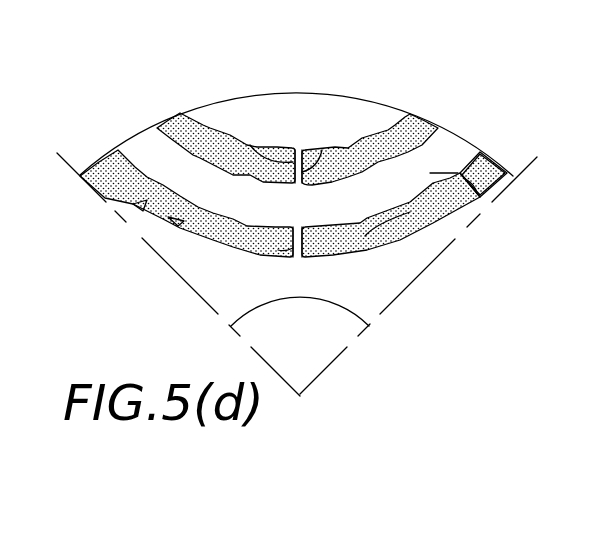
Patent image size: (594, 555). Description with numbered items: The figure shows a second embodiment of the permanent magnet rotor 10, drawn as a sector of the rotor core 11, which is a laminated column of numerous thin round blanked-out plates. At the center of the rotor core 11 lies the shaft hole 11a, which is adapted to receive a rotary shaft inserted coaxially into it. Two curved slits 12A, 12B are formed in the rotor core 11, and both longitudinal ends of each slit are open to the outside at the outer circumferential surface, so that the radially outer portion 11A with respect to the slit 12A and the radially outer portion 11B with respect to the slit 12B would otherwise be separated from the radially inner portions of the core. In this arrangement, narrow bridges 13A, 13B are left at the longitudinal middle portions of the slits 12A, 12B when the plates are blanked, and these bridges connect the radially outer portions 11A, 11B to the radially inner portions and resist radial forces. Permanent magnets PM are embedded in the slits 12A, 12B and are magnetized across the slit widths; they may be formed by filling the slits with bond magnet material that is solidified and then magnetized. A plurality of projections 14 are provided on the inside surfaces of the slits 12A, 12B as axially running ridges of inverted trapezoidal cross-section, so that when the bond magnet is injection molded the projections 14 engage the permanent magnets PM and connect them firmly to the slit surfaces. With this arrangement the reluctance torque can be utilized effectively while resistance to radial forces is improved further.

The permanent magnet rotor 10 is at (463, 63).
The rotor core 11 is at (416, 264).
The radially outer portion of the rotor core 11A is at (332, 104).
The radially outer portion of the rotor core 11B is at (478, 198).
The shaft hole 11a is at (337, 307).
The slit 12A is at (193, 124).
The slit 12B is at (130, 168).
The bridge 13A is at (322, 150).
The bridge 13B is at (280, 247).
The projection 14 is at (295, 150).
The permanent magnet PM is at (480, 151).